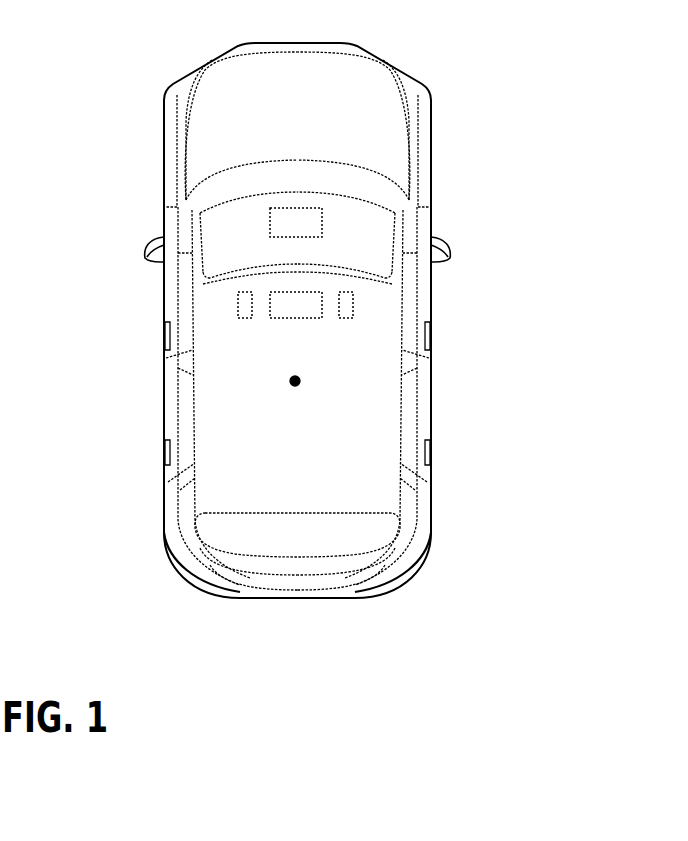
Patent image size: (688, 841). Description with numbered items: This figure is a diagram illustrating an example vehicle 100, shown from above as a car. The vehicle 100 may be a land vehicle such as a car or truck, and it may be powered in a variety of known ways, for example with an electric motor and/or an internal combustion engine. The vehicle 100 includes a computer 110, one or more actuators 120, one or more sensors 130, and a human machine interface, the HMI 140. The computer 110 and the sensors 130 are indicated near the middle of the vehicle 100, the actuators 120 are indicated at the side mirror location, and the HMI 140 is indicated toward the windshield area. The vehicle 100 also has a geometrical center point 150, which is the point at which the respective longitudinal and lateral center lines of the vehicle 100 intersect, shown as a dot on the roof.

The vehicle 100 is at (312, 469).
The computer 110 is at (324, 182).
The actuator 120 is at (148, 232).
The sensor 130 is at (380, 310).
The human machine interface 140 is at (327, 210).
The geometrical center point 150 is at (290, 385).